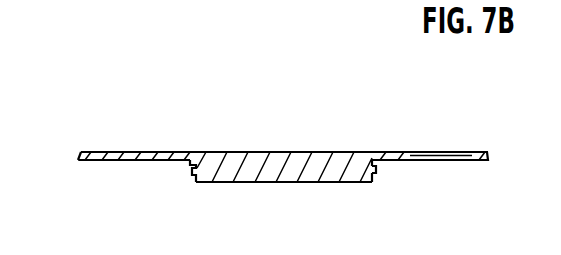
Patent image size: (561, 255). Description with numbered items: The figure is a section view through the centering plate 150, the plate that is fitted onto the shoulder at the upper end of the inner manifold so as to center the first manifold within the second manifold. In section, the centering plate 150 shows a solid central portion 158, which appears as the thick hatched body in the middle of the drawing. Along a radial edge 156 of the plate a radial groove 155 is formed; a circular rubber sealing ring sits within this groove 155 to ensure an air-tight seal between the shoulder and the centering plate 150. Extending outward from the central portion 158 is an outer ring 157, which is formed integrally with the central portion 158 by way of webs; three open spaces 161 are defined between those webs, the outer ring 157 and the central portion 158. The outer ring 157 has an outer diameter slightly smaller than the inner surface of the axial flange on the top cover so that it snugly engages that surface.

The centering plate 150 is at (232, 118).
The radial groove 155 is at (376, 172).
The radial edge 156 is at (373, 182).
The outer ring 157 is at (480, 155).
The central portion 158 is at (288, 152).
The open spaces 161 is at (440, 150).